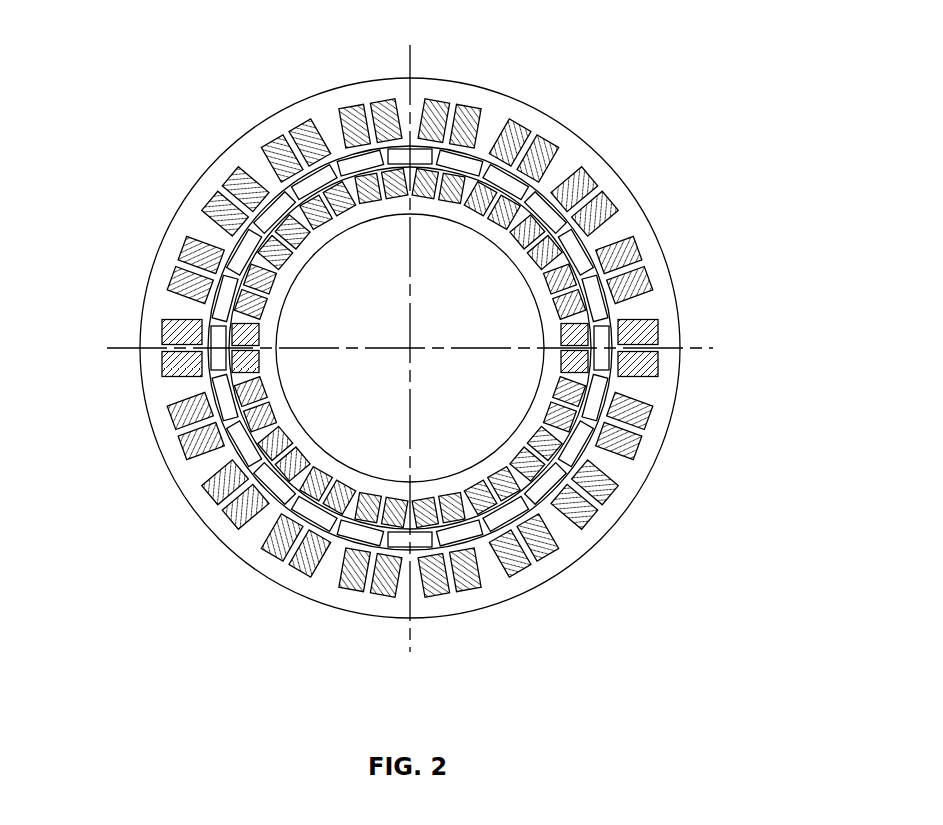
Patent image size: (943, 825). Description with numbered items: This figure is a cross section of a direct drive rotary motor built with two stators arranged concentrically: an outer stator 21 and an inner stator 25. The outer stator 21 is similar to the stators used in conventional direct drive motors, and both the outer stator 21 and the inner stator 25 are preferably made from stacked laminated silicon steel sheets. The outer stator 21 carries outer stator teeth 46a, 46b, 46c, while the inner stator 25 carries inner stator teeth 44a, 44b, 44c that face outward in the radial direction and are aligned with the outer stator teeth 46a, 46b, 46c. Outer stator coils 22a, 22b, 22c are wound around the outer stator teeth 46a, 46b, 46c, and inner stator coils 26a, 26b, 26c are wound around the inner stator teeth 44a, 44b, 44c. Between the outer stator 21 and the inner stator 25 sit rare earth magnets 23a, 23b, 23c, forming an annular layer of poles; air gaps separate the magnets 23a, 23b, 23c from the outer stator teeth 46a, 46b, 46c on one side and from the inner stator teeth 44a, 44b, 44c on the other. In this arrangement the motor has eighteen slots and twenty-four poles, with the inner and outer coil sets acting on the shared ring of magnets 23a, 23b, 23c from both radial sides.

The outer stator 21 is at (620, 197).
The outer stator coil 22a is at (655, 277).
The outer stator coil 22b is at (660, 363).
The outer stator coil 22c is at (625, 443).
The rare earth magnet 23a is at (454, 150).
The rare earth magnet 23b is at (500, 172).
The rare earth magnet 23c is at (540, 198).
The inner stator 25 is at (213, 310).
The inner stator coil 26a is at (172, 412).
The inner stator coil 26b is at (196, 498).
The inner stator coil 26c is at (273, 557).
The inner stator tooth 44a is at (358, 205).
The inner stator tooth 44b is at (299, 203).
The inner stator tooth 44c is at (250, 245).
The outer stator tooth 46a is at (603, 510).
The outer stator tooth 46b is at (525, 502).
The outer stator tooth 46c is at (452, 582).